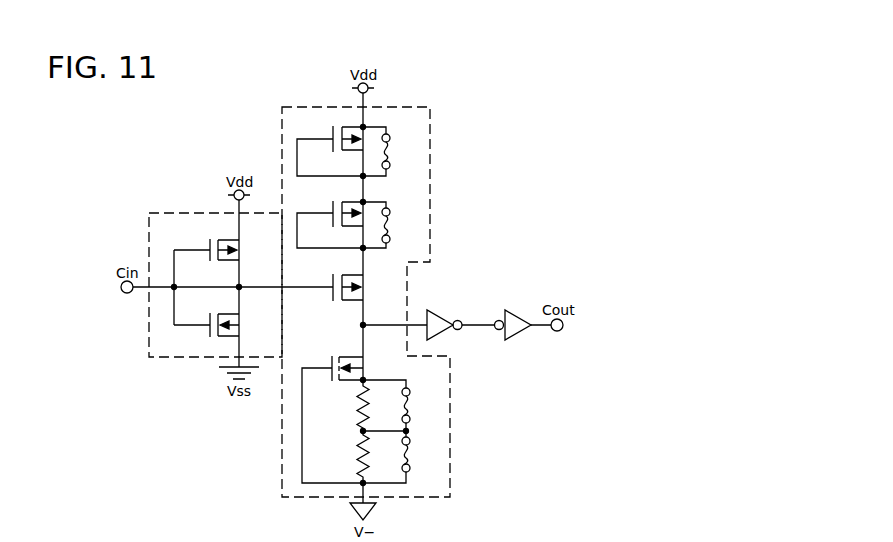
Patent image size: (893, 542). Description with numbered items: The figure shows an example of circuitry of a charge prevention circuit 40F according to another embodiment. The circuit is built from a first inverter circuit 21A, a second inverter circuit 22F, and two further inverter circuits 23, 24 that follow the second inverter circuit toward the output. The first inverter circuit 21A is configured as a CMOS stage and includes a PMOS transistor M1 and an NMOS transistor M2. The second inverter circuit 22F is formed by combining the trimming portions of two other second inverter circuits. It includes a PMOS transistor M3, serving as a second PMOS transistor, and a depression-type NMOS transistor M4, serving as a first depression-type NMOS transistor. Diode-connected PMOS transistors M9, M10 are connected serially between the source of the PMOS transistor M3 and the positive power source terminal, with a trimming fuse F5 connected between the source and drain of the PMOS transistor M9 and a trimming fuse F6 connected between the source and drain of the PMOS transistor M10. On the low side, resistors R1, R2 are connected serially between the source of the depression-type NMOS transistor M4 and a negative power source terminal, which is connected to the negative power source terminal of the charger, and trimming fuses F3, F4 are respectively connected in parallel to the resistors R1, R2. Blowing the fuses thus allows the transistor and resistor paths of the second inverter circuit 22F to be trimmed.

The first inverter circuit 21A is at (185, 213).
The second inverter circuit 22F is at (329, 107).
The charge prevention circuit 40F is at (506, 251).
The inverter circuit 23 is at (441, 313).
The inverter circuit 24 is at (519, 313).
The PMOS transistor M1 is at (206, 241).
The NMOS transistor M2 is at (206, 293).
The PMOS transistor M3 is at (348, 286).
The depression-type NMOS transistor M4 is at (334, 404).
The diode-connected PMOS transistor M9 is at (331, 144).
The diode-connected PMOS transistor M10 is at (331, 213).
The resistor R1 is at (351, 407).
The resistor R2 is at (351, 458).
The trimming fuse F3 is at (397, 407).
The trimming fuse F4 is at (397, 457).
The trimming fuse F5 is at (387, 151).
The trimming fuse F6 is at (387, 225).